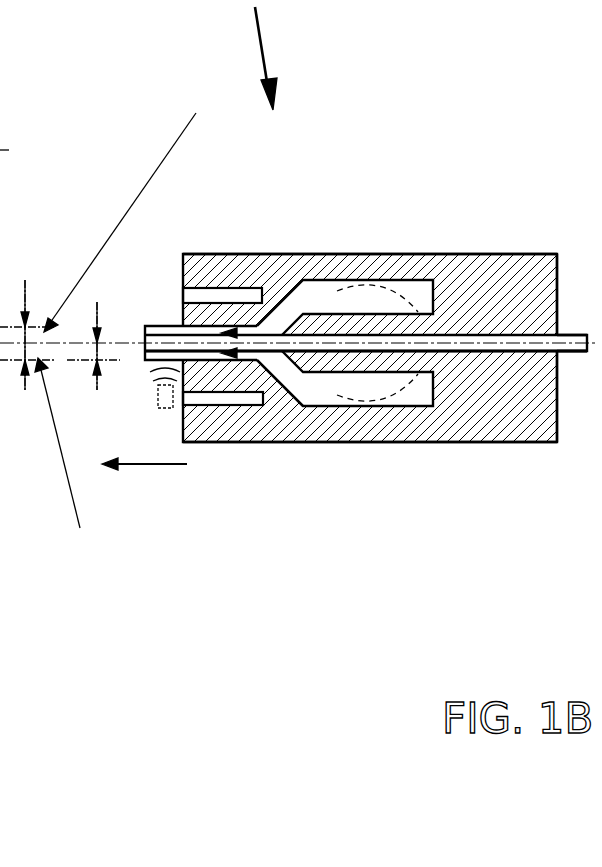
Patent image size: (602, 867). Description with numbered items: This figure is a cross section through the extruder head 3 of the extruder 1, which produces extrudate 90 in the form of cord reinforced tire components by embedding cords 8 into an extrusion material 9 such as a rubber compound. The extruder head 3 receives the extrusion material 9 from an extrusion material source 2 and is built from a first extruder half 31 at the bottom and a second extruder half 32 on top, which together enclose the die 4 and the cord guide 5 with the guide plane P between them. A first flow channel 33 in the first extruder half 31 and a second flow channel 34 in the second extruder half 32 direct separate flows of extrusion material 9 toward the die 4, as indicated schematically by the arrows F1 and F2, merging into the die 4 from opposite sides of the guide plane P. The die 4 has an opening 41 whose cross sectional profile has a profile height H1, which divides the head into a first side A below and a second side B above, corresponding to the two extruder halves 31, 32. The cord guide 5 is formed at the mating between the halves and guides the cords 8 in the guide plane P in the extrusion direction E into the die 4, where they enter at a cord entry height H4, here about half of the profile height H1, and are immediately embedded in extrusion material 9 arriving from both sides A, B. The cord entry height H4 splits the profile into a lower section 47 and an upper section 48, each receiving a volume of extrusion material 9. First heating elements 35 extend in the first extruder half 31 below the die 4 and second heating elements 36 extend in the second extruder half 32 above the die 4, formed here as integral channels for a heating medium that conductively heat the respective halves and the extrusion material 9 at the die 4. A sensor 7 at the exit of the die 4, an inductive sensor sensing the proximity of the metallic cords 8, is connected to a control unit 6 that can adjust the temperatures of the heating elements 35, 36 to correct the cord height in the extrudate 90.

The extruder 1 is at (264, 55).
The extrusion material source 2 is at (440, 300).
The extruder head 3 is at (300, 254).
The die 4 is at (283, 380).
The opening 41 is at (283, 380).
The cord guide 5 is at (497, 350).
The control unit 6 is at (13, 149).
The sensor 7 is at (165, 398).
The cords 8 is at (577, 335).
The extrusion material 9 is at (253, 380).
The first extruder half 31 is at (538, 427).
The second extruder half 32 is at (542, 254).
The first flow channel 33 is at (432, 350).
The second flow channel 34 is at (433, 282).
The first heating elements 35 is at (222, 372).
The second heating elements 36 is at (212, 320).
The lower section 47 is at (76, 459).
The upper section 48 is at (134, 208).
The extrudate 90 is at (168, 326).
The profile height H1 is at (33, 335).
The cord entry height H4 is at (103, 337).
The first flow arrow F1 is at (236, 353).
The second flow arrow F2 is at (236, 333).
The extrusion direction E is at (144, 475).
The first side A is at (382, 458).
The second side B is at (376, 227).
The guide plane P is at (352, 346).